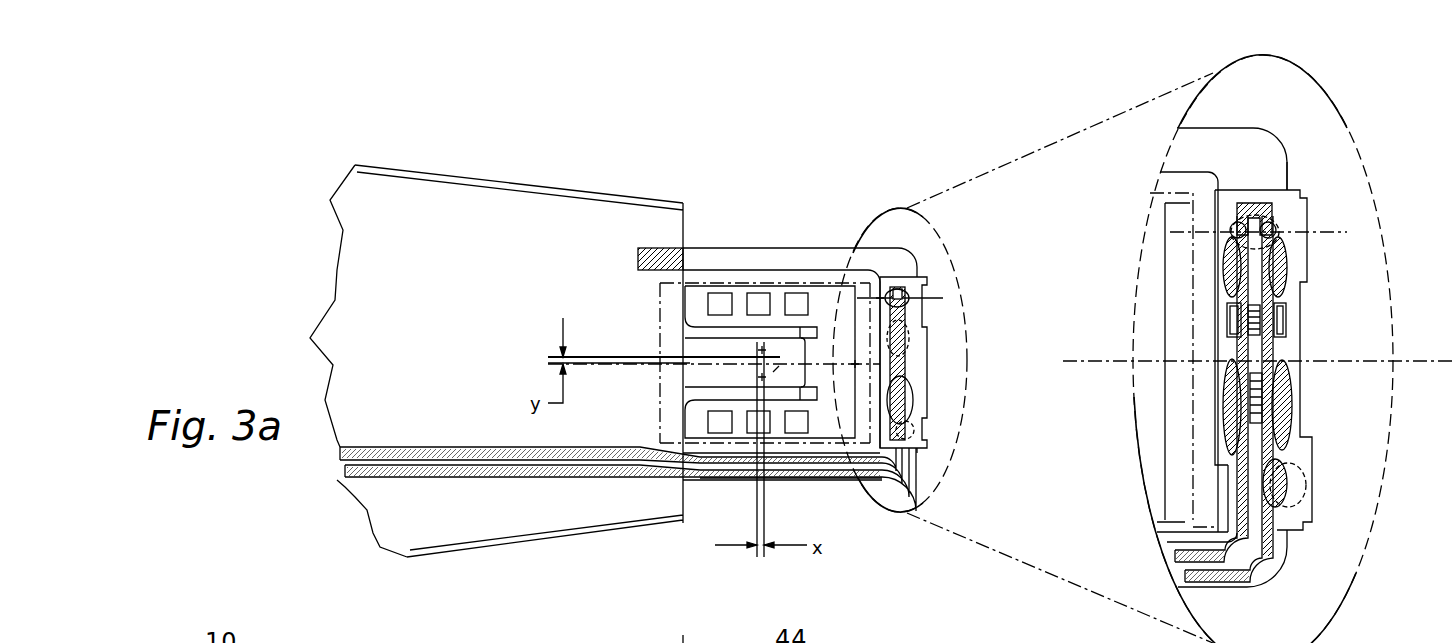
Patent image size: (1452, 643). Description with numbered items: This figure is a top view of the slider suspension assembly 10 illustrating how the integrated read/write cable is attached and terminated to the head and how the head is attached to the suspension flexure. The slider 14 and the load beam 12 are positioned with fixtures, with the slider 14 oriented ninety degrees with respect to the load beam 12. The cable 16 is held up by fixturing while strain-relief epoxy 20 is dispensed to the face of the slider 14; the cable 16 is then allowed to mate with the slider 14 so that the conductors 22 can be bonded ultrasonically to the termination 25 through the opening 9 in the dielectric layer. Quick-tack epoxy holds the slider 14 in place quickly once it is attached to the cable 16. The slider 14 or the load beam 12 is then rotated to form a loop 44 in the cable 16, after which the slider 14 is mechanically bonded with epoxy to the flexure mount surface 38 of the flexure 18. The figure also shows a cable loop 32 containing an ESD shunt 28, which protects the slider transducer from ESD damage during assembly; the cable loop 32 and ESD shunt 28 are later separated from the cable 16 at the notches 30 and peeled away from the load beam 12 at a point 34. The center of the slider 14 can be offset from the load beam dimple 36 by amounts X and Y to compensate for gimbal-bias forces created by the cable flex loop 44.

The slider suspension assembly 10 is at (279, 171).
The load beam 12 is at (462, 343).
The slider 14 is at (1293, 530).
The cable 16 is at (428, 447).
The flexure 18 is at (822, 298).
The strain-relief epoxy 20 is at (1277, 272).
The conductors 22 is at (500, 468).
The termination 25 is at (1233, 335).
The ESD shunt 28 is at (1253, 208).
The notches 30 is at (1273, 228).
The cable loop 32 is at (720, 262).
The point 34 is at (638, 258).
The load beam dimple 36 is at (755, 365).
The flexure mount surface 38 is at (805, 325).
The loop 44 is at (803, 480).
The opening 9 is at (1280, 336).